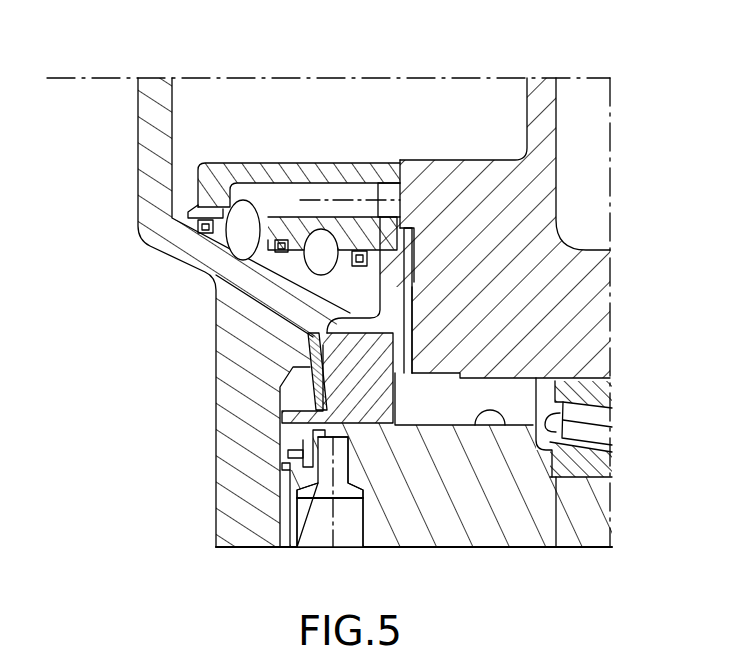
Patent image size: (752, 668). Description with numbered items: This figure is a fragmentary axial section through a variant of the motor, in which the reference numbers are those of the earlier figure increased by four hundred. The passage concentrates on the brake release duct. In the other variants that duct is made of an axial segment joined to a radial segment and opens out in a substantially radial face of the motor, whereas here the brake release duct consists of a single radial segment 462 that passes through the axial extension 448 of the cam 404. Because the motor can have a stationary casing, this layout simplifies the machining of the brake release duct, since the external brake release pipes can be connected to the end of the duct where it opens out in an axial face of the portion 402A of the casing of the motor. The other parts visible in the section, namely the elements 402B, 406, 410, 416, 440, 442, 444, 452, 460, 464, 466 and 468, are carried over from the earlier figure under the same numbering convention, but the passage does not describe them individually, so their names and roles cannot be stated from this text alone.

The portion of the casing 402A is at (592, 540).
The housing section B 402B is at (222, 326).
The cam 404 is at (507, 425).
The housing 406 is at (548, 205).
The axis of rotation 410 is at (395, 75).
The flange 416 is at (283, 163).
The seal 440 is at (313, 410).
The seal carrier plate 442 is at (414, 235).
The bore surface 444 is at (410, 305).
The axial extension of the cam 448 is at (380, 447).
The spacer ring 452 is at (393, 385).
The retaining ring 460 is at (313, 455).
The radial segment of the brake release duct 462 is at (335, 505).
The pin 464 is at (380, 420).
The clip 466 is at (293, 454).
The seal lip 468 is at (310, 370).